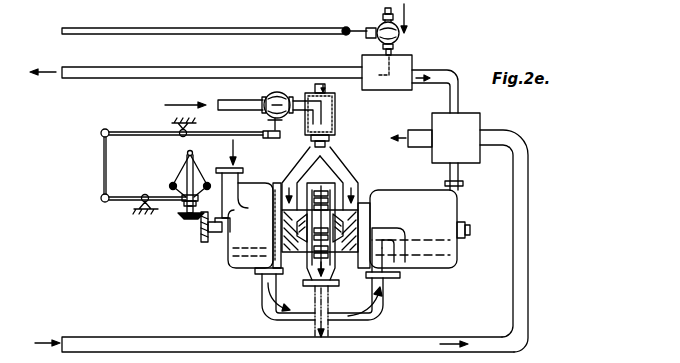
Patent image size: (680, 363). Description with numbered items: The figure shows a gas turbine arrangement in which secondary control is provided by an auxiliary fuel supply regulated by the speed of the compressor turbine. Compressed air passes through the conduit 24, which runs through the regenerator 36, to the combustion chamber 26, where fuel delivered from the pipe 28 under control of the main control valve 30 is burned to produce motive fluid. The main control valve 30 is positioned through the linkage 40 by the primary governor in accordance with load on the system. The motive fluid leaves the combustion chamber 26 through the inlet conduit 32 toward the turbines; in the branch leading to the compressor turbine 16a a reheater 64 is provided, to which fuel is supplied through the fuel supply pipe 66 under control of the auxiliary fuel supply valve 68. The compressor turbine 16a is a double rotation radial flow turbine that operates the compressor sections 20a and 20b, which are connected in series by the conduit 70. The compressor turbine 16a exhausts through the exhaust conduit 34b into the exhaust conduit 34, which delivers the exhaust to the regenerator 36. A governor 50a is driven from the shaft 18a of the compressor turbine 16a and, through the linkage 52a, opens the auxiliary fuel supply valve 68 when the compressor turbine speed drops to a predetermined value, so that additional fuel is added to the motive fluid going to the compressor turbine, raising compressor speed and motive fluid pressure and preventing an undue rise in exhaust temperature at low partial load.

The linkage 40 is at (194, 30).
The inlet conduit 32 is at (176, 67).
The pipe 28 is at (382, 12).
The main control valve 30 is at (402, 40).
The combustion chamber 26 is at (362, 60).
The conduit 24 is at (457, 80).
The regenerator 36 is at (472, 119).
The exhaust conduit 34 is at (417, 331).
The fuel supply pipe 66 is at (232, 102).
The auxiliary fuel supply valve 68 is at (262, 114).
The reheater 64 is at (336, 117).
The compressor turbine 16a is at (338, 173).
The exhaust conduit 34b is at (315, 298).
The compressor section 20a is at (250, 270).
The compressor section 20b is at (440, 264).
The conduit 70 is at (347, 310).
The linkage 52a is at (103, 168).
The governor 50a is at (187, 162).
The shaft 18a is at (211, 234).